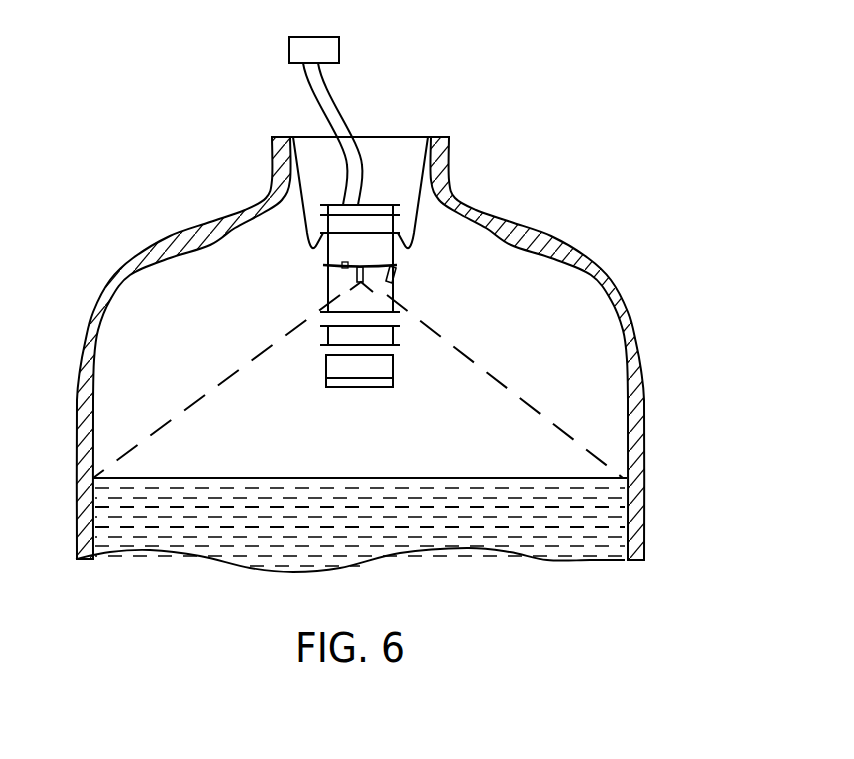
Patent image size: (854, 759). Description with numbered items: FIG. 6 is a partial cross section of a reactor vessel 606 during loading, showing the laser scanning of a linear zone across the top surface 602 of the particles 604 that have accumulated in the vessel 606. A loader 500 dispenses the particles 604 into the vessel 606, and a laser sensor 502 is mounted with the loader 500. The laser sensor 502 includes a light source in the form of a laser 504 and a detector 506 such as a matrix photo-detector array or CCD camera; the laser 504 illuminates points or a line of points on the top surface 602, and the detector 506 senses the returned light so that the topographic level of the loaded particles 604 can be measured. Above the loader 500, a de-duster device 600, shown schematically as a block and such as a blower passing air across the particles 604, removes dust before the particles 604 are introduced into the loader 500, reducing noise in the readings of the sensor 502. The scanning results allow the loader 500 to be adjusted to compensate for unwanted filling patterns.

The loader 500 is at (358, 341).
The laser sensor 502 is at (413, 266).
The laser 504 is at (357, 278).
The detector 506 is at (398, 275).
The de-duster device 600 is at (340, 50).
The top surface 602 is at (453, 478).
The particles 604 is at (583, 523).
The vessel 606 is at (517, 227).